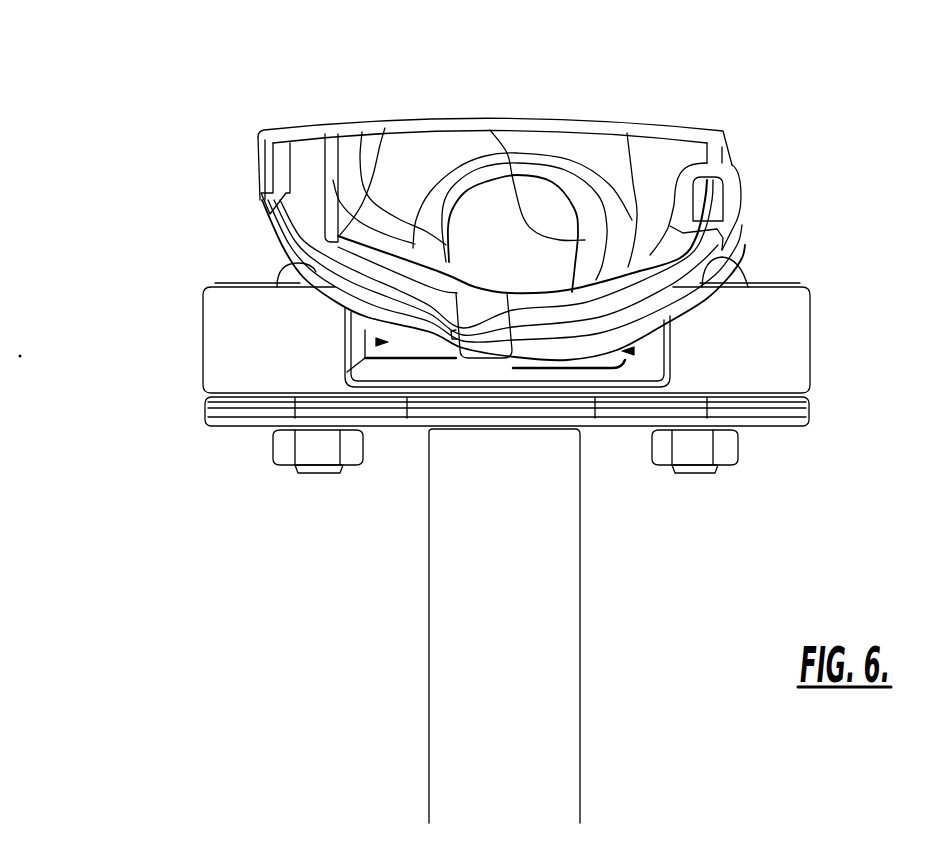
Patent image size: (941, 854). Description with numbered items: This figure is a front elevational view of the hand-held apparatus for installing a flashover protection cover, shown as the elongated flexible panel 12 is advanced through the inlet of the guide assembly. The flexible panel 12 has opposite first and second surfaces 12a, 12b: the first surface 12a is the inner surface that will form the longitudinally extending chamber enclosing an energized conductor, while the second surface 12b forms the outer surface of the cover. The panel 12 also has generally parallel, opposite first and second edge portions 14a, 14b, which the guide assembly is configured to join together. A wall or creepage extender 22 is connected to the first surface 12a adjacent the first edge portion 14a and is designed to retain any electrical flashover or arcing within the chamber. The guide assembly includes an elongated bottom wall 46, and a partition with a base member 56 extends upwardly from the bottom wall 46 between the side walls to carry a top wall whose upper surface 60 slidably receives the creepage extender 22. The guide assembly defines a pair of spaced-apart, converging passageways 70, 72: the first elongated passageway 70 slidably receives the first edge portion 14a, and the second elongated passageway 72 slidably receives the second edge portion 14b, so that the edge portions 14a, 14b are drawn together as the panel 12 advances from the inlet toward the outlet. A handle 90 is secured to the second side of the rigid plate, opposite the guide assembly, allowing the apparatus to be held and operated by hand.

The elongated flexible panel 12 is at (583, 118).
The first surface 12a is at (612, 152).
The second surface 12b is at (457, 118).
The first edge portion 14a is at (270, 177).
The second edge portion 14b is at (718, 158).
The creepage extender 22 is at (385, 128).
The elongated bottom wall 46 is at (412, 370).
The base member 56 is at (480, 337).
The upper surface 60 is at (530, 290).
The first elongated passageway 70 is at (378, 342).
The second elongated passageway 72 is at (630, 351).
The handle 90 is at (580, 683).